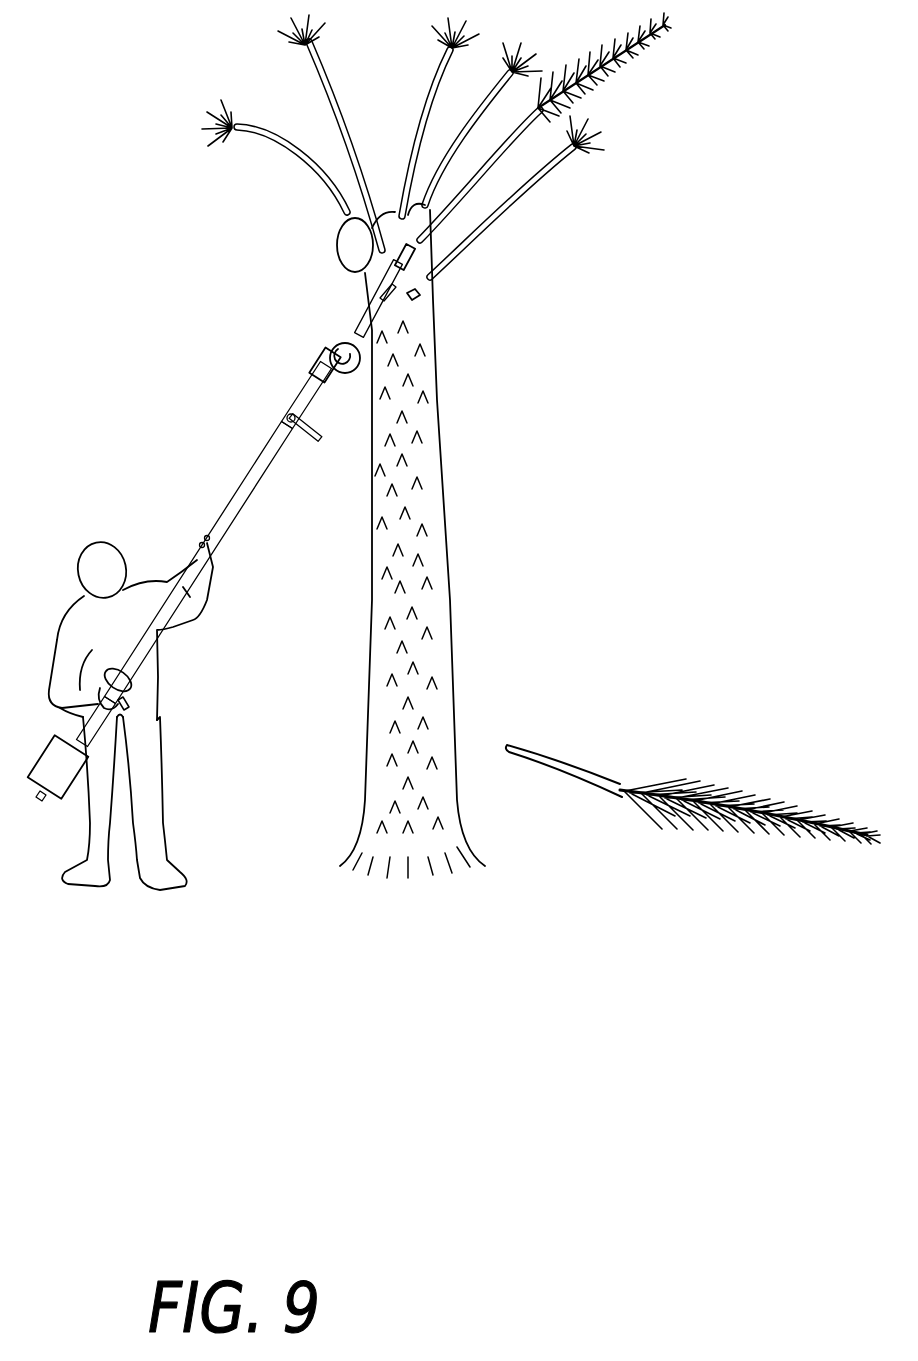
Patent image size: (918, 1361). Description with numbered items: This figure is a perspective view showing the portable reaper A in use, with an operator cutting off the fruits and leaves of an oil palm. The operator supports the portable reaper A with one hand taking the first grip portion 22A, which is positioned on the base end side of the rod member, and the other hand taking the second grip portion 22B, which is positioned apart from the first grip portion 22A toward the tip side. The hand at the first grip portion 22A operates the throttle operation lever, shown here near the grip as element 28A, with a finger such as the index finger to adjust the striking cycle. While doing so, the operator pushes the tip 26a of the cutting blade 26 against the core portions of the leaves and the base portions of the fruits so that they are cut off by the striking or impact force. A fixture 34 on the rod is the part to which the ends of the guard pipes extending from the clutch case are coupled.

The portable reaper A is at (229, 460).
The first grip portion 22A is at (122, 699).
The second grip portion 22B is at (193, 565).
The cutting blade 26 is at (402, 276).
The tip of the cutting blade 26a is at (415, 257).
The trigger control 28A is at (124, 707).
The fixture 34 is at (307, 437).